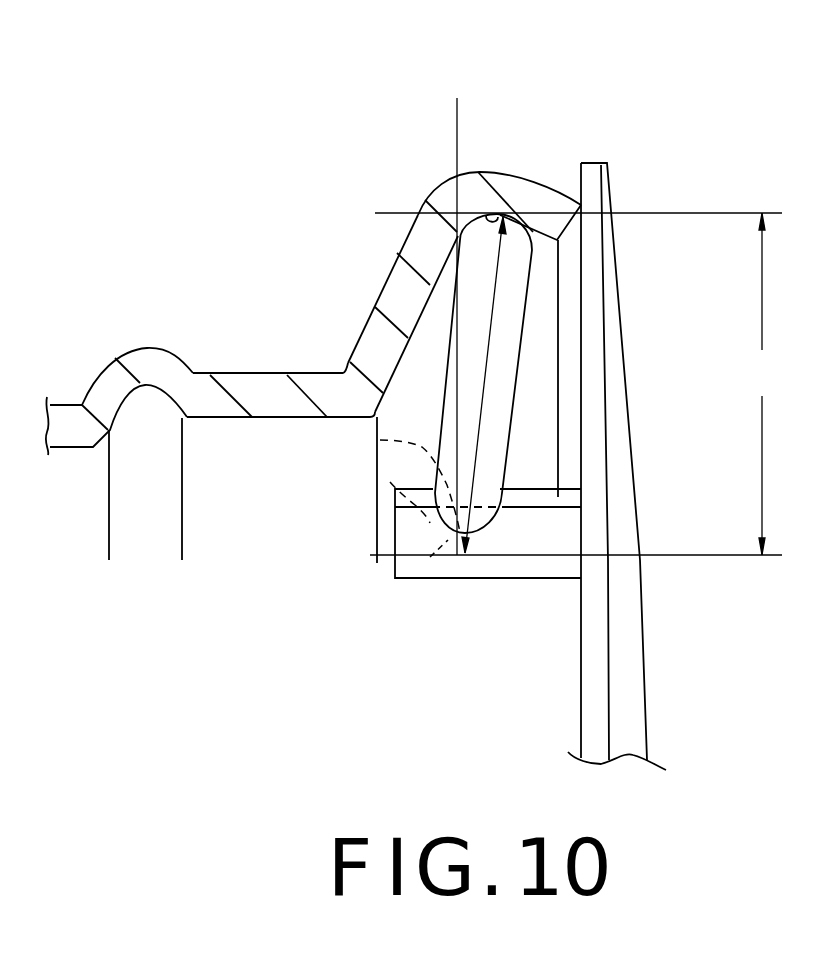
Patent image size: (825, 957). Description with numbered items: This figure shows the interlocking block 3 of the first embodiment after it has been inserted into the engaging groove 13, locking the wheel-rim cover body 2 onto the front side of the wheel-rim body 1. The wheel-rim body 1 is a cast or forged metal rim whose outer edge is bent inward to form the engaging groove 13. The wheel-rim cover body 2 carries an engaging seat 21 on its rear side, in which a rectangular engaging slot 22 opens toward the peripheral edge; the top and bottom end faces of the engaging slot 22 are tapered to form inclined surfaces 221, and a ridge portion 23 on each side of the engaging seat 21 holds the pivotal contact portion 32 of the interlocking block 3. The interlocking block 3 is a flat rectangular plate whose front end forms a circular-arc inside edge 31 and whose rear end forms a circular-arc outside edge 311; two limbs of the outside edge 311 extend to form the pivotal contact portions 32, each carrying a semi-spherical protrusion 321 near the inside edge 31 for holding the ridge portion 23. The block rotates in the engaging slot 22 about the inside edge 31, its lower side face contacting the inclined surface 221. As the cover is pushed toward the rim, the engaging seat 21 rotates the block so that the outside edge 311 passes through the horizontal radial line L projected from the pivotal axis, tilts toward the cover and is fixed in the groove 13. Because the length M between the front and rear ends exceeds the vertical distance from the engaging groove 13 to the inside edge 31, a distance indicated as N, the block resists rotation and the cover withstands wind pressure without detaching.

The wheel-rim body 1 is at (230, 373).
The wheel-rim cover body 2 is at (595, 163).
The interlocking block 3 is at (440, 302).
The engaging groove 13 is at (490, 214).
The engaging seat 21 is at (462, 578).
The engaging slot 22 is at (430, 557).
The ridge portion 23 is at (573, 499).
The inside edge 31 is at (490, 543).
The pivotal contact portion 32 is at (361, 337).
The inclined surface 221 is at (390, 482).
The outside edge 311 is at (546, 236).
The semi-spherical protrusion 321 is at (380, 441).
The horizontal radial line L is at (454, 301).
The length M is at (484, 385).
The dimension N is at (576, 384).